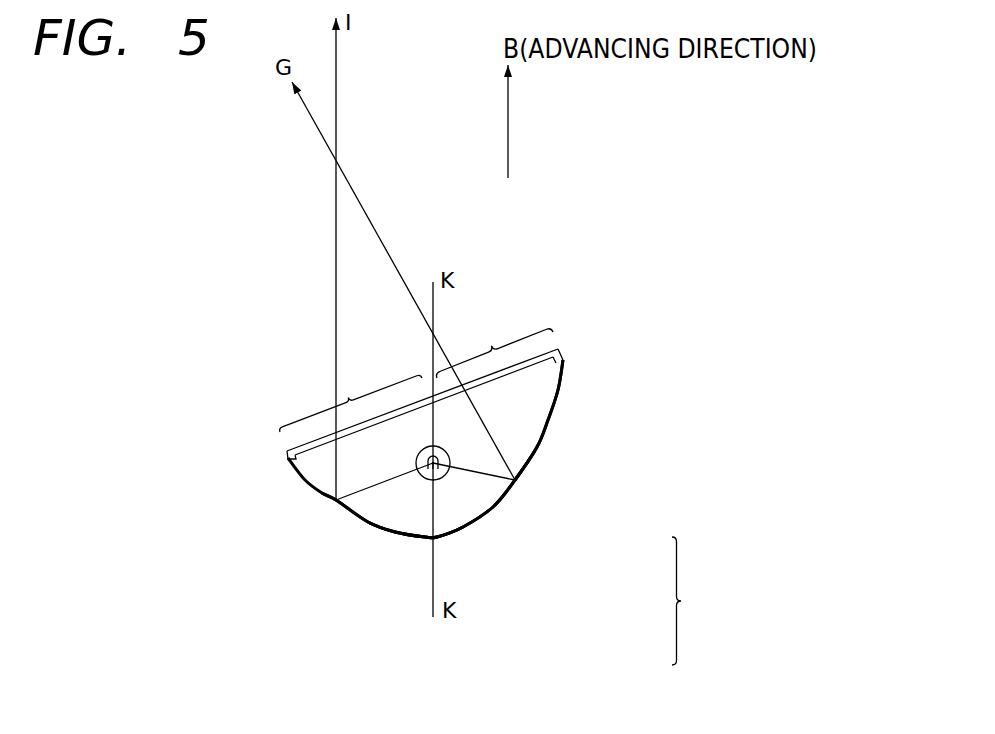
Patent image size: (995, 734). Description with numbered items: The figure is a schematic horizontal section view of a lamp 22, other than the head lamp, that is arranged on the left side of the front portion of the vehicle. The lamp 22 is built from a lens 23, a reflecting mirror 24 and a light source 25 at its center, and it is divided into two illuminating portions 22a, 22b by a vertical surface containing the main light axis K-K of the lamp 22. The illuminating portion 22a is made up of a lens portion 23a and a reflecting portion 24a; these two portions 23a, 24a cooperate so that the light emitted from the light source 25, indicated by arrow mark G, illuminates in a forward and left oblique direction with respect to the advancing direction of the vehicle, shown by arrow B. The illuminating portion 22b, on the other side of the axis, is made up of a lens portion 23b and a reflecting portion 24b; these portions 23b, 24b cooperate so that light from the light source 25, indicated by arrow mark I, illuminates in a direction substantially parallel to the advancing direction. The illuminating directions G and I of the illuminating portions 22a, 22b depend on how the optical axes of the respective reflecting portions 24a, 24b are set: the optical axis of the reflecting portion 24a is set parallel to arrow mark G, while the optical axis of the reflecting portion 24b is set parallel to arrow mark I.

The lamp 22 is at (695, 601).
The illuminating portion 22a is at (538, 490).
The illuminating portion 22b is at (393, 557).
The lens 23 is at (550, 348).
The lens portion 23a is at (493, 345).
The lens portion 23b is at (349, 395).
The reflecting mirror 24 is at (542, 443).
The reflecting portion 24a is at (485, 520).
The reflecting portion 24b is at (373, 523).
The light source 25 is at (417, 463).